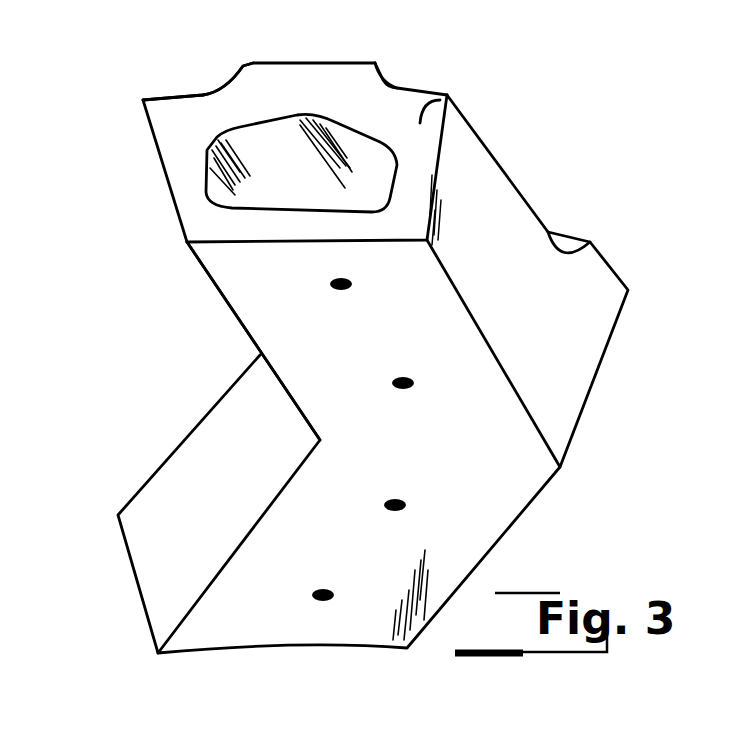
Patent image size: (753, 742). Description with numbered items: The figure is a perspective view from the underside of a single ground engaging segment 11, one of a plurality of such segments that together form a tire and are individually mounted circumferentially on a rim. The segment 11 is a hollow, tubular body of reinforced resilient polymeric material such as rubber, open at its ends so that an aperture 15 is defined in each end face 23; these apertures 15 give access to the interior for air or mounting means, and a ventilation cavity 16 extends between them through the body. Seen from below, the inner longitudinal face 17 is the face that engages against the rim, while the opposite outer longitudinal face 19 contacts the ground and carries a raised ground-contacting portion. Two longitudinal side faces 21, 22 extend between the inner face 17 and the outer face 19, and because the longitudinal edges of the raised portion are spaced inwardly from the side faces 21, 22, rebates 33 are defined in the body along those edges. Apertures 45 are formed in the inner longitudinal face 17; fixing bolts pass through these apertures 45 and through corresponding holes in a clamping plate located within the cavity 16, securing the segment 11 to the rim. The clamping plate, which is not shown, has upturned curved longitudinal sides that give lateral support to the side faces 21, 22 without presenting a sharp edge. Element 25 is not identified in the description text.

The ground engaging segment 11 is at (108, 222).
The aperture 15 is at (212, 188).
The ventilation cavity 16 is at (378, 178).
The inner longitudinal face 17 is at (247, 295).
The outer longitudinal face 19 is at (330, 62).
The longitudinal side face 21 is at (573, 367).
The longitudinal side face 22 is at (165, 500).
The end face 23 is at (447, 98).
The notch 25 is at (253, 58).
The rebate 33 is at (207, 90).
The aperture 45 is at (407, 507).